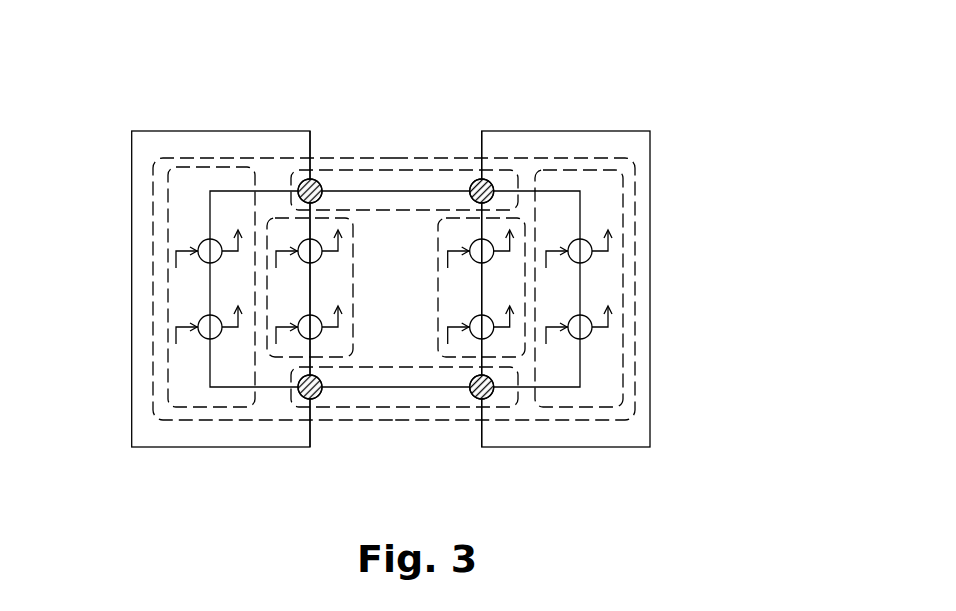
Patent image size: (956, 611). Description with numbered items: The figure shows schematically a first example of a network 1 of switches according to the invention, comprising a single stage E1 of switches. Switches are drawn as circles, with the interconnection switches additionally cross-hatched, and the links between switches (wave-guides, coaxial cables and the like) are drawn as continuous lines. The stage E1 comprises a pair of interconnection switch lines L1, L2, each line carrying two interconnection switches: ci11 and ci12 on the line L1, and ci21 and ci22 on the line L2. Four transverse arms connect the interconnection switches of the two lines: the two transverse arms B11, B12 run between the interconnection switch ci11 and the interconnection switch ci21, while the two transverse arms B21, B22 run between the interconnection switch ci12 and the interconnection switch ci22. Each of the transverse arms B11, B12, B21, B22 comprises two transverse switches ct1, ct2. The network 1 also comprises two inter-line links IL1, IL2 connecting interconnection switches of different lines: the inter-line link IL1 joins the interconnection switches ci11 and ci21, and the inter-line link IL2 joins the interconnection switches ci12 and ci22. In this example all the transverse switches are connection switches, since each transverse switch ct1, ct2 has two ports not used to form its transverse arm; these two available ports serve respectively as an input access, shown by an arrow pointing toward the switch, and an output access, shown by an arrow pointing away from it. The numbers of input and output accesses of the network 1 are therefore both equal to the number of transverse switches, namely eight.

The network of switches 1 is at (463, 82).
The inter-line link IL1 is at (131, 260).
The inter-line link IL2 is at (590, 134).
The interconnection switch line L1 is at (391, 172).
The interconnection switch line L2 is at (393, 410).
The interconnection switch ci11 is at (320, 178).
The interconnection switch ci12 is at (476, 178).
The interconnection switch ci21 is at (320, 398).
The interconnection switch ci22 is at (472, 397).
The transverse arm B11 is at (212, 408).
The transverse arm B12 is at (283, 357).
The transverse arm B21 is at (505, 358).
The transverse arm B22 is at (577, 408).
The transverse switch ct1 is at (202, 241).
The transverse switch ct2 is at (202, 340).
The stage E1 is at (637, 288).